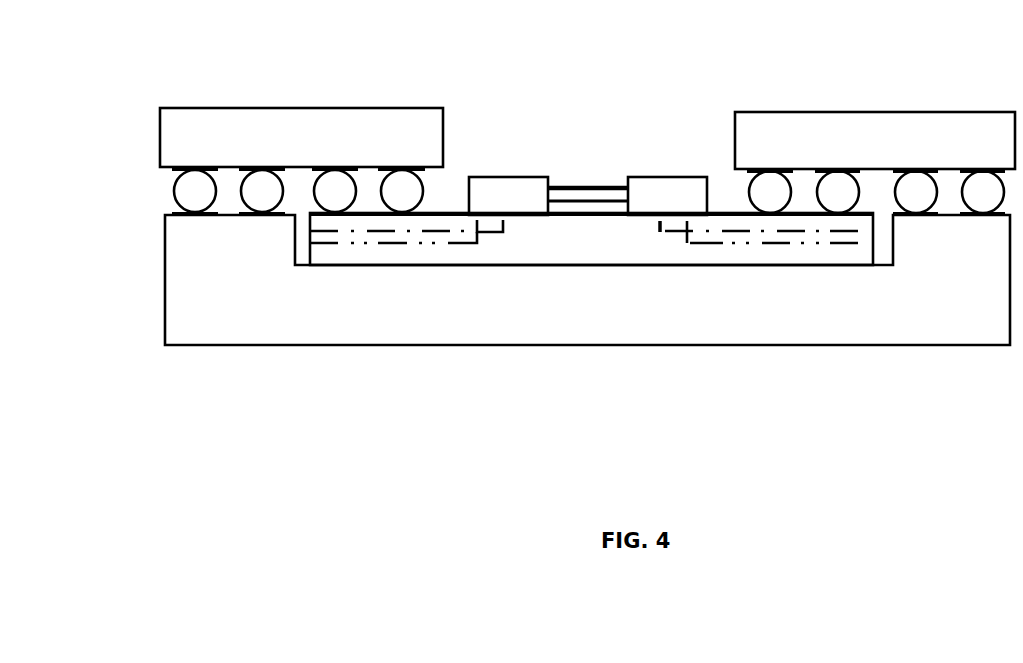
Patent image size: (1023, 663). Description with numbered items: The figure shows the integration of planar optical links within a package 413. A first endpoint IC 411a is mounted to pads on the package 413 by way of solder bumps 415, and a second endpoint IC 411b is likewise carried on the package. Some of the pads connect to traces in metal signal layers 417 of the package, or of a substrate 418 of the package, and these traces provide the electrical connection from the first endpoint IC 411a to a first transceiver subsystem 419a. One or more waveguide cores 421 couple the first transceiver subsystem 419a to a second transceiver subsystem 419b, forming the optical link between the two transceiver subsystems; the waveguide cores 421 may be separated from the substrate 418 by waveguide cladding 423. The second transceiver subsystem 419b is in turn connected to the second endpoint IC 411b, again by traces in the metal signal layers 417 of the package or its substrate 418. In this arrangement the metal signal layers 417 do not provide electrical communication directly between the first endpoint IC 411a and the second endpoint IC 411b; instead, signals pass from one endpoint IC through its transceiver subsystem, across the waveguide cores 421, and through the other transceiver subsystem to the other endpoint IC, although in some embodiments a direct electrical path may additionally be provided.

The first endpoint IC 411a is at (303, 108).
The second endpoint IC 411b is at (880, 113).
The package 413 is at (358, 345).
The solder bumps 415 is at (242, 178).
The metal signal layers 417 is at (393, 243).
The substrate 418 is at (617, 266).
The first transceiver subsystem 419a is at (507, 175).
The second transceiver subsystem 419b is at (660, 175).
The waveguide cores 421 is at (570, 184).
The waveguide cladding 423 is at (600, 199).